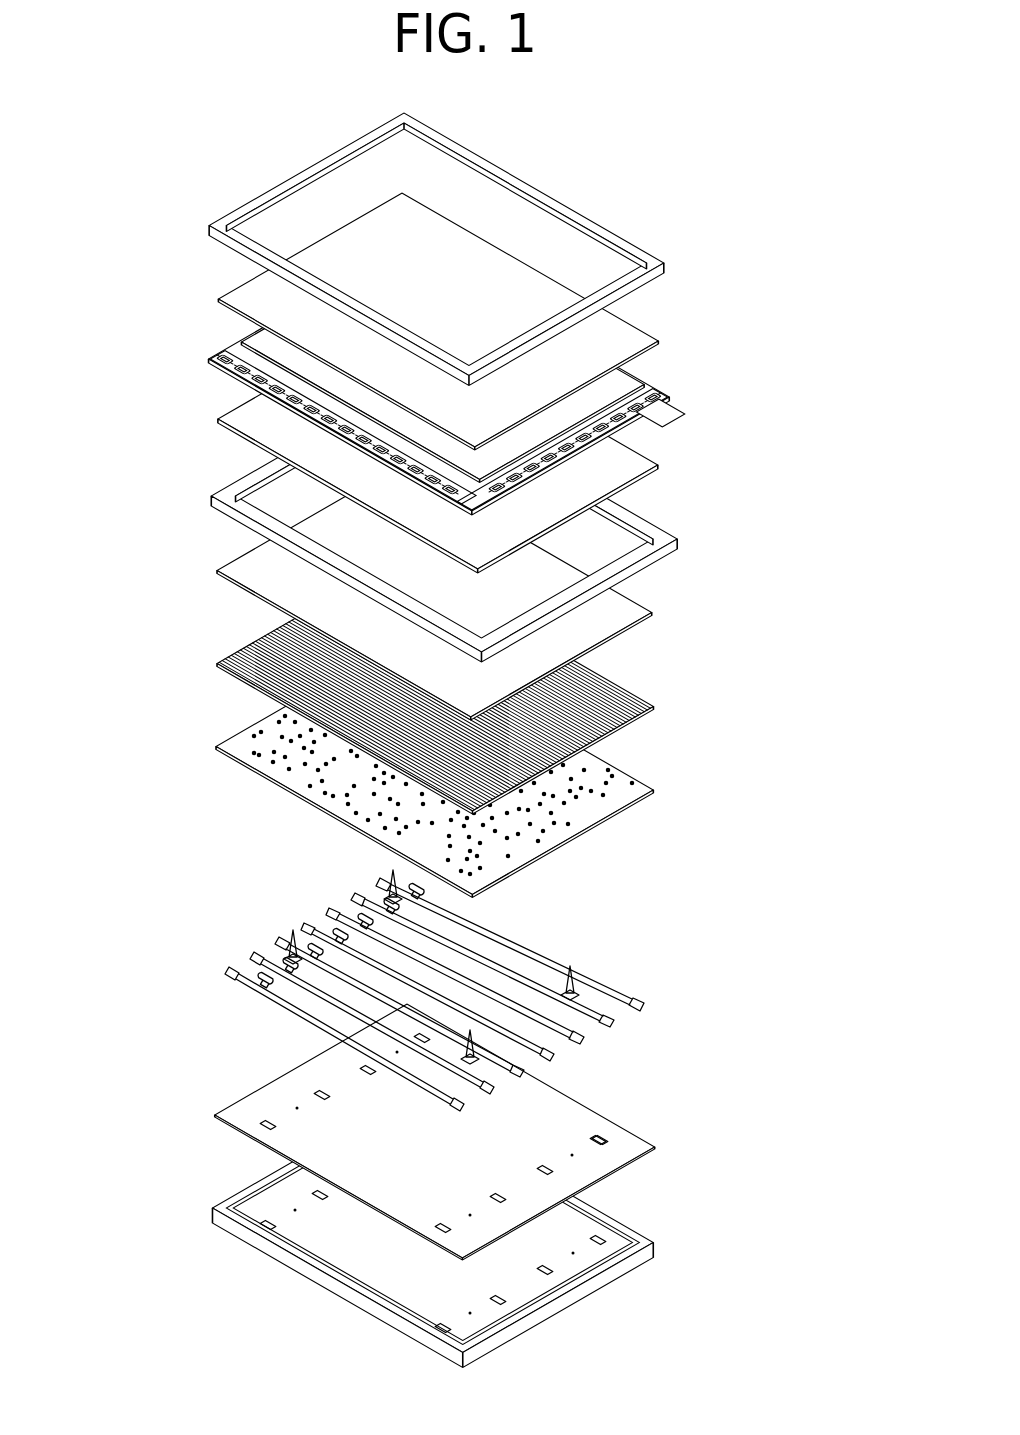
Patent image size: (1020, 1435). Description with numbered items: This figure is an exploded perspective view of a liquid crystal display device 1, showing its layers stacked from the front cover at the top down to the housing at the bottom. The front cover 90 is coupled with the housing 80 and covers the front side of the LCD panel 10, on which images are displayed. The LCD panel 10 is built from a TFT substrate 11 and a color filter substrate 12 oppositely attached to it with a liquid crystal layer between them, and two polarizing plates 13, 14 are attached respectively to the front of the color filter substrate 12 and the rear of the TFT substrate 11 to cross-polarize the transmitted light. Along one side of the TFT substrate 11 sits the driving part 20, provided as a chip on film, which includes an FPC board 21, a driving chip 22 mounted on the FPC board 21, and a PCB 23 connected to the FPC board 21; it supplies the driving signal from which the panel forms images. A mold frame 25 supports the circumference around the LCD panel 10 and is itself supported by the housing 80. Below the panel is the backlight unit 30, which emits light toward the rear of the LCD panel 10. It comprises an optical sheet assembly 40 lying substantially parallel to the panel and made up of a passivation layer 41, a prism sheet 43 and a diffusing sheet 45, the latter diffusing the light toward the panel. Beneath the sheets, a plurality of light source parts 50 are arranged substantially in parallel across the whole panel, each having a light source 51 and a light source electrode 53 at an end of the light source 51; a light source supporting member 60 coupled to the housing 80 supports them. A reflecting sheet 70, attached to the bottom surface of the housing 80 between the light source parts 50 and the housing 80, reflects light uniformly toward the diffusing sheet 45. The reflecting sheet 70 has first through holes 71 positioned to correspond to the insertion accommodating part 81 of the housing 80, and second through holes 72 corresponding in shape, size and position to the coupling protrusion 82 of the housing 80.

The liquid crystal display device 1 is at (475, 740).
The front cover 90 is at (212, 229).
The polarizing plate 13 is at (220, 300).
The LCD panel 10 is at (372, 380).
The color filter substrate 12 is at (240, 343).
The TFT substrate 11 is at (210, 360).
The polarizing plate 14 is at (220, 421).
The driving part 20 is at (519, 385).
The driving chip 22 is at (438, 376).
The PCB 23 is at (438, 378).
The FPC board 21 is at (660, 395).
The mold frame 25 is at (668, 544).
The backlight unit 30 is at (542, 863).
The optical sheet assembly 40 is at (522, 682).
The passivation layer 41 is at (501, 593).
The prism sheet 43 is at (650, 700).
The diffusing sheet 45 is at (650, 780).
The light source part 50 is at (452, 990).
The light source 51 is at (545, 942).
The light source electrode 53 is at (585, 877).
The light source supporting member 60 is at (262, 975).
The reflecting sheet 70 is at (521, 1132).
The first through holes 71 is at (572, 1152).
The second through holes 72 is at (603, 1136).
The housing 80 is at (492, 1233).
The insertion accommodating part 81 is at (574, 1258).
The coupling protrusion 82 is at (610, 1238).